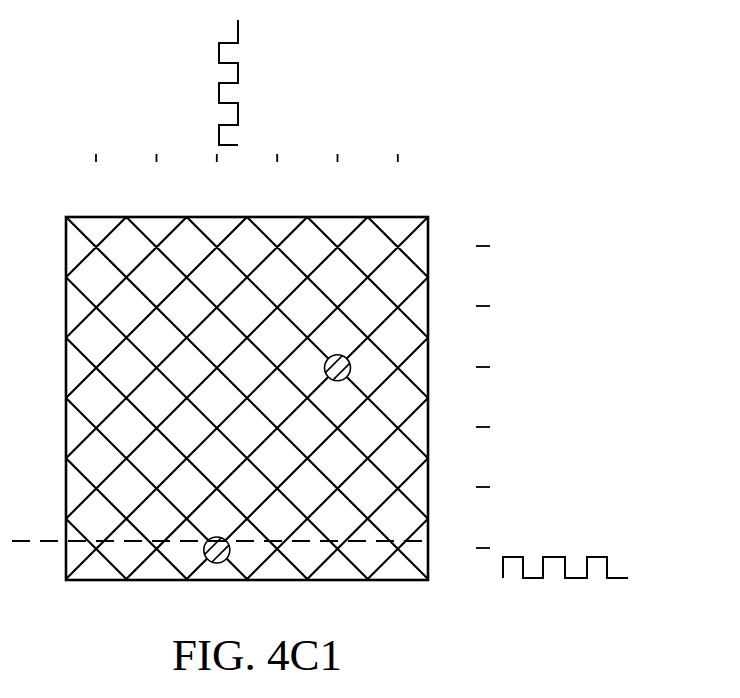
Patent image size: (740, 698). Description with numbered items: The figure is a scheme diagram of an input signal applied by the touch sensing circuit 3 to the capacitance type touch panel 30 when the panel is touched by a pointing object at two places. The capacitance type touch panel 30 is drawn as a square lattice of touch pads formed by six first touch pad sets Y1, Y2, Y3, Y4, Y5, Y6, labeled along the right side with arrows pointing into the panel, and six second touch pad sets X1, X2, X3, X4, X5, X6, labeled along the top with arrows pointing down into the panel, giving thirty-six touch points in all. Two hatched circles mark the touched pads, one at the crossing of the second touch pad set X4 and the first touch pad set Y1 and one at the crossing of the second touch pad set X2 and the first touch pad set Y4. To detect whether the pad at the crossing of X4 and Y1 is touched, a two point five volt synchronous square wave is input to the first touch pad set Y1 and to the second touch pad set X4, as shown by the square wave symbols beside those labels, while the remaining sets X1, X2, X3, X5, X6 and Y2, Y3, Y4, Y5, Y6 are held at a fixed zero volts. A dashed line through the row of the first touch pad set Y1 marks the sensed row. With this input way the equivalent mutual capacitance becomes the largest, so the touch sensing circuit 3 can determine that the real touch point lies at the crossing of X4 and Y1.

The touch sensing circuit 3 is at (537, 94).
The capacitance type touch panel 30 is at (428, 216).
The second touch pad set X1 is at (398, 215).
The second touch pad set X2 is at (338, 215).
The second touch pad set X3 is at (277, 215).
The second touch pad set X4 is at (217, 215).
The second touch pad set X5 is at (156, 215).
The second touch pad set X6 is at (96, 215).
The first touch pad set Y1 is at (431, 549).
The first touch pad set Y2 is at (431, 488).
The first touch pad set Y3 is at (431, 428).
The first touch pad set Y4 is at (431, 368).
The first touch pad set Y5 is at (431, 308).
The first touch pad set Y6 is at (431, 247).